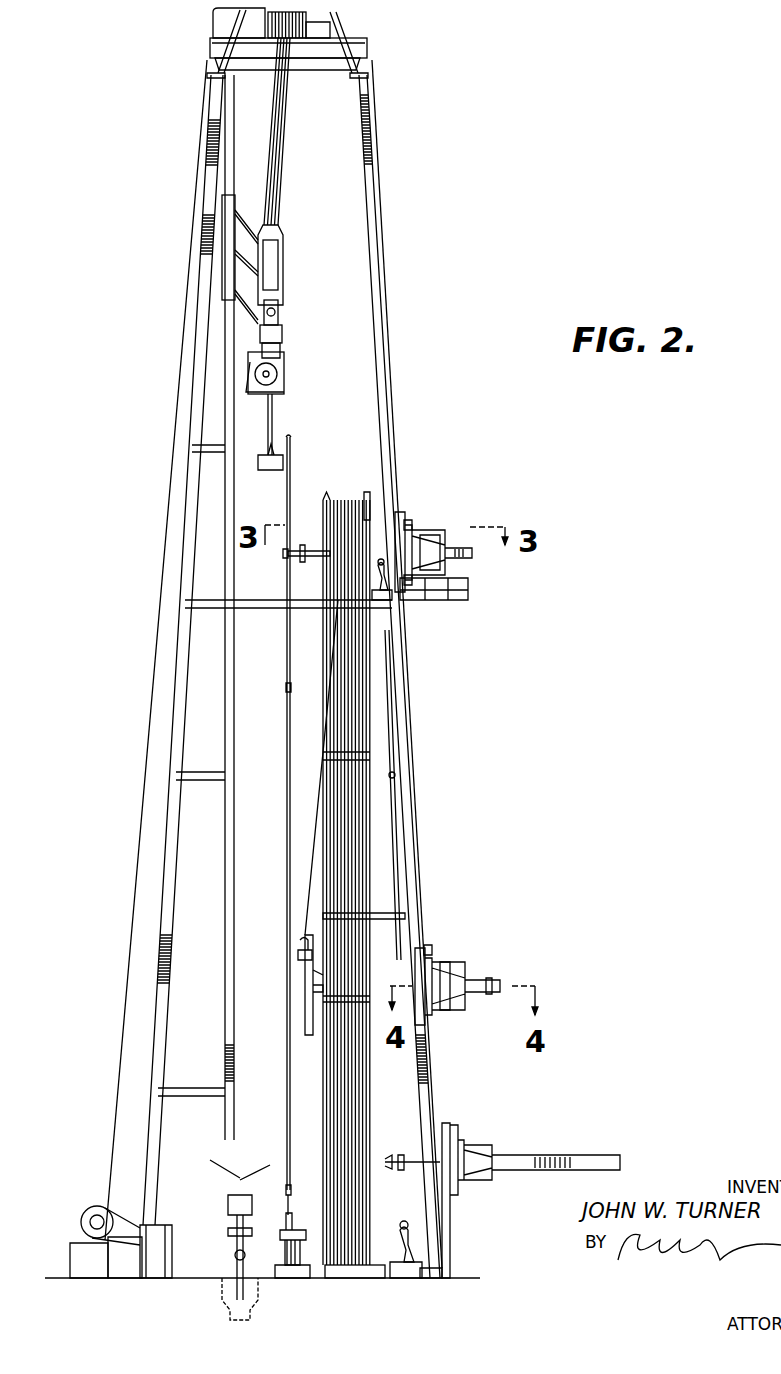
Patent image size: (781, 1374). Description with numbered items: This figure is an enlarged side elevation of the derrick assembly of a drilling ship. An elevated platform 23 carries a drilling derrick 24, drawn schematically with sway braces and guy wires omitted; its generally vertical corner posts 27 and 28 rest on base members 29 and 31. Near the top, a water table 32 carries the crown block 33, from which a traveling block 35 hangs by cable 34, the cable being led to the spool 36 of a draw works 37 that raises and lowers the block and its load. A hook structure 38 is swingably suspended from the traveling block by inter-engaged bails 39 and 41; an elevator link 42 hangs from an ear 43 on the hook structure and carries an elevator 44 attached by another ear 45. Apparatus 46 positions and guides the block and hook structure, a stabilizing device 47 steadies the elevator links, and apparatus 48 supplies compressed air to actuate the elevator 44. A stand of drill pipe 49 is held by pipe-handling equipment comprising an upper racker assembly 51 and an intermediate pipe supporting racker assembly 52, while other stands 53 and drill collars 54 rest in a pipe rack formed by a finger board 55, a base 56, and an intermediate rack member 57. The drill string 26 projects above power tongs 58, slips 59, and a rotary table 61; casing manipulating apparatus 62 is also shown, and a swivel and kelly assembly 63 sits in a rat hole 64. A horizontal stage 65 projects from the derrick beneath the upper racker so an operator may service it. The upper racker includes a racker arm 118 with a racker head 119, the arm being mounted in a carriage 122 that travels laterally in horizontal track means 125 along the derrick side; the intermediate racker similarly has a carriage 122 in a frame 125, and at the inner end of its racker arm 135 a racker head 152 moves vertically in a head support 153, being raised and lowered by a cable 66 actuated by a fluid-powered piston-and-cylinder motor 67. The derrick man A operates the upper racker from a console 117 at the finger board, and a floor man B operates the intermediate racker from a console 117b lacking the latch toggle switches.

The elevated platform 23 is at (474, 1276).
The drilling derrick 24 is at (293, 669).
The drill string 26 is at (296, 1218).
The corner post 27 is at (427, 1066).
The corner post 28 is at (172, 958).
The base member 29 is at (440, 1280).
The base member 31 is at (153, 1278).
The water table 32 is at (367, 50).
The crown block 33 is at (306, 21).
The cable 34 is at (292, 140).
The traveling block 35 is at (297, 240).
The spool 36 is at (92, 1207).
The draw works 37 is at (70, 1245).
The hook structure 38 is at (292, 323).
The bail 39 is at (280, 302).
The bail 41 is at (278, 292).
The elevator link 42 is at (282, 410).
The ear 43 is at (283, 350).
The elevator 44 is at (268, 460).
The ear 45 is at (266, 470).
The block and hook positioning and guiding apparatus 46 is at (220, 250).
The elevator link stabilizing device 47 is at (248, 375).
The compressed air supply apparatus 48 is at (246, 340).
The stand of drill pipe 49 is at (282, 665).
The upper racker assembly 51 is at (428, 510).
The intermediate pipe supporting racker assembly 52 is at (502, 946).
The stands of drill pipe 53 is at (327, 492).
The drill collars 54 is at (366, 492).
The finger board 55 is at (316, 600).
The base 56 is at (360, 1280).
The intermediate rack member 57 is at (388, 922).
The power tongs 58 is at (306, 1238).
The slips 59 is at (285, 1262).
The rotary table 61 is at (296, 1280).
The casing manipulating apparatus 62 is at (505, 1130).
The swivel and kelly assembly 63 is at (232, 1232).
The rat hole 64 is at (232, 1300).
The horizontal stage 65 is at (470, 600).
The cable 66 is at (325, 805).
The fluid-powered piston-and-cylinder motor 67 is at (398, 828).
The console 117 is at (380, 580).
The console 117b is at (400, 1225).
The racker arm 118 is at (313, 548).
The racker head 119 is at (285, 560).
The carriage 122 is at (440, 535).
The horizontal track means 125 is at (402, 522).
The racker arm 135 is at (322, 1000).
The racker head 152 is at (298, 958).
The head support 153 is at (305, 1006).
The derrick man A is at (395, 595).
The floor man B is at (425, 1255).